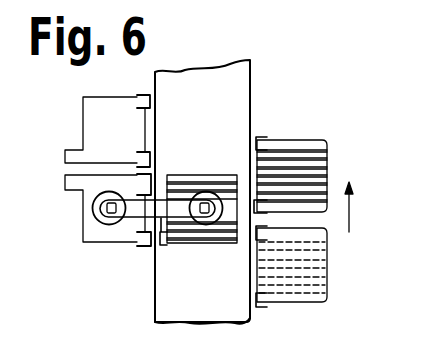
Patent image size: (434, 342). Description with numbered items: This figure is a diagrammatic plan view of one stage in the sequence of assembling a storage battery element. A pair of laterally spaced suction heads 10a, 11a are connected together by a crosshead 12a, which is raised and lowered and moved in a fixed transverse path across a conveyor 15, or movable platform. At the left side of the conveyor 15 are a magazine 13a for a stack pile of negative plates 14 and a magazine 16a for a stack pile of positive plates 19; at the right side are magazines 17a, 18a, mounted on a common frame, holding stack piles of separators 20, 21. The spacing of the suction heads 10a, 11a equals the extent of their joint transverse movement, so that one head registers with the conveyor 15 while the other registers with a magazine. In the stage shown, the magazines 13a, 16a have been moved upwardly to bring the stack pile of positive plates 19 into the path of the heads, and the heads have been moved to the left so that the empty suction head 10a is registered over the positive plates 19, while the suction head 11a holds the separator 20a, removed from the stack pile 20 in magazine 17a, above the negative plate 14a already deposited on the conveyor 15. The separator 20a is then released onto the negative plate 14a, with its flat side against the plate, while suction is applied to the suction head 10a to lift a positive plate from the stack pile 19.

The suction head 10a is at (115, 222).
The suction head 11a is at (197, 198).
The crosshead 12a is at (157, 203).
The magazine 13a is at (145, 95).
The negative plates 14 is at (87, 118).
The negative plate 14a is at (163, 238).
The conveyor 15 is at (244, 93).
The magazine 16a is at (143, 245).
The magazine 17a is at (262, 137).
The magazine 18a is at (261, 307).
The positive plates 19 is at (87, 225).
The separators 20 is at (305, 140).
The separator 20a is at (206, 243).
The separators 21 is at (327, 288).